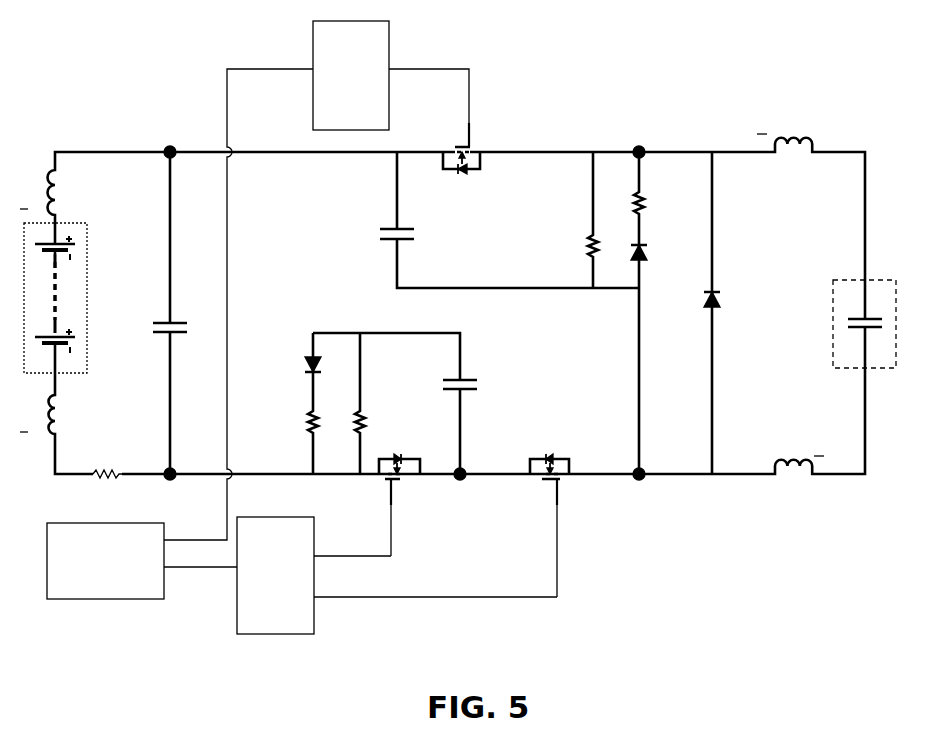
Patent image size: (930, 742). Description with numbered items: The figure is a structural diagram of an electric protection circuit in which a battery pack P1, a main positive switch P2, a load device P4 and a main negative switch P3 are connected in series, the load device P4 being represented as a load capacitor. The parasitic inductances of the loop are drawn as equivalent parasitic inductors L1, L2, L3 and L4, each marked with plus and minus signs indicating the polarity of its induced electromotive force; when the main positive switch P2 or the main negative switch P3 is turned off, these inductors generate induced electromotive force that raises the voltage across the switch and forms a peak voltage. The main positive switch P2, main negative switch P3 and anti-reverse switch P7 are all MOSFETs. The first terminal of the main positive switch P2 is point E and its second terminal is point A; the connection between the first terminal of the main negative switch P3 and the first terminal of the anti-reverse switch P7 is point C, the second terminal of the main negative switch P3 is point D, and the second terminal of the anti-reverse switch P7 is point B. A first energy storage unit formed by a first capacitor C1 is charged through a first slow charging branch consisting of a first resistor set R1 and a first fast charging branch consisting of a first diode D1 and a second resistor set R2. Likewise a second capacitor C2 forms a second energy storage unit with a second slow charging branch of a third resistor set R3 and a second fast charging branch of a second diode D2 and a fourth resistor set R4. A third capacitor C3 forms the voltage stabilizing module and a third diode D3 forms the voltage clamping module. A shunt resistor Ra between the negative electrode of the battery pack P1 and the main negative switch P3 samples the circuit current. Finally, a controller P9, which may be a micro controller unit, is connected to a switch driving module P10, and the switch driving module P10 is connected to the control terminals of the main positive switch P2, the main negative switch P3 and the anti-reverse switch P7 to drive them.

The parasitic inductor L1 is at (51, 188).
The parasitic inductor L2 is at (51, 406).
The parasitic inductor L3 is at (793, 155).
The parasitic inductor L4 is at (790, 475).
The battery pack P1 is at (84, 250).
The main positive switch P2 is at (459, 145).
The main negative switch P3 is at (401, 505).
The anti-reverse switch P7 is at (547, 525).
The load device P4 is at (896, 300).
The controller P9 is at (142, 561).
The switch driving module P10 is at (360, 327).
The first capacitor C1 is at (416, 235).
The second capacitor C2 is at (479, 387).
The third capacitor C3 is at (186, 328).
The first resistor set R1 is at (577, 247).
The second resistor set R2 is at (656, 204).
The third resistor set R3 is at (379, 423).
The fourth resistor set R4 is at (297, 423).
The shunt resistor Ra is at (107, 489).
The first diode D1 is at (656, 255).
The second diode D2 is at (299, 365).
The third diode D3 is at (727, 303).
The point A is at (638, 142).
The point B is at (638, 488).
The point C is at (459, 488).
The point D is at (169, 488).
The point E is at (169, 142).